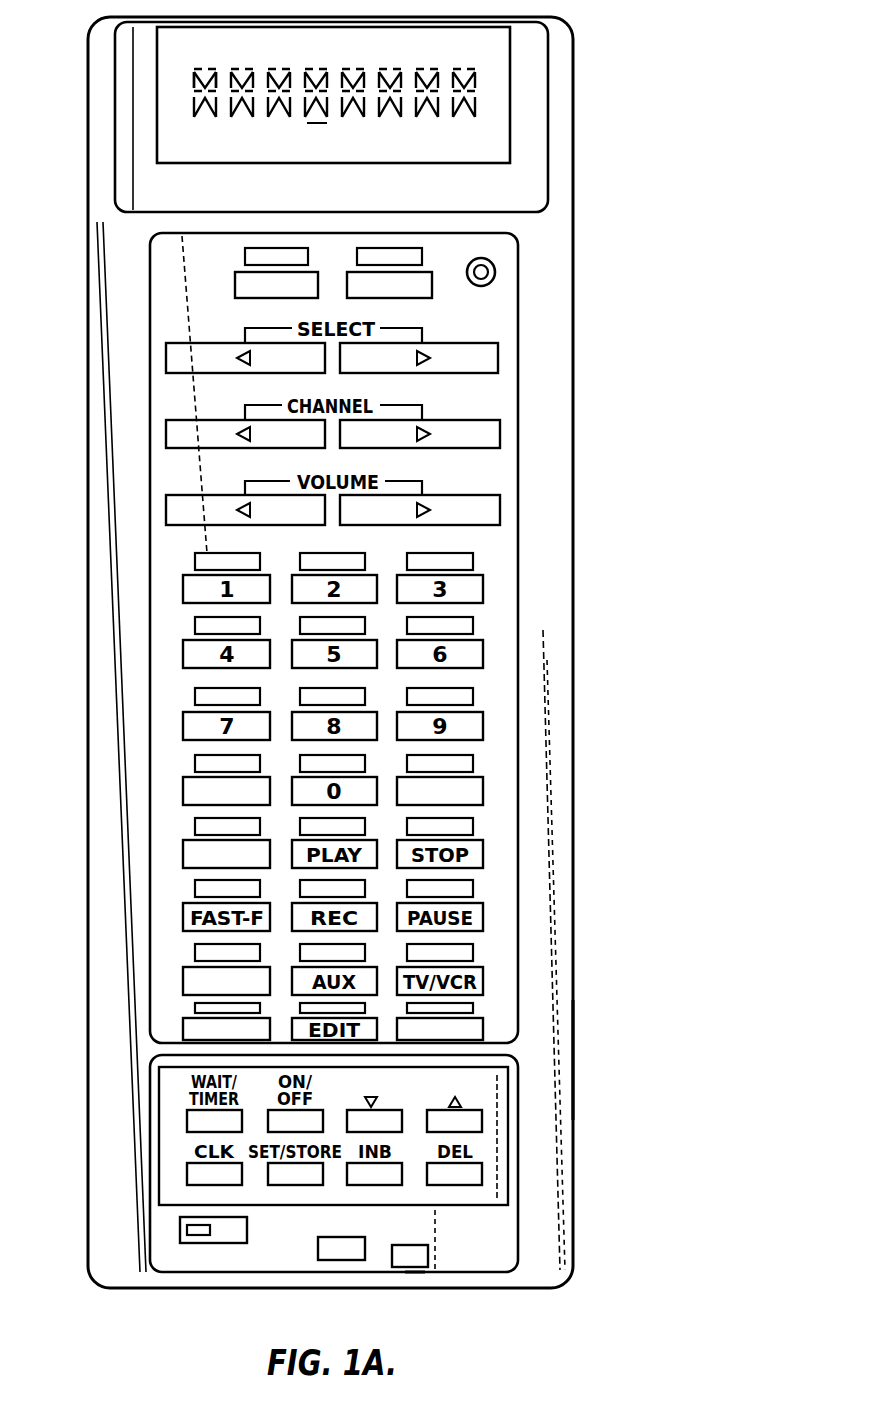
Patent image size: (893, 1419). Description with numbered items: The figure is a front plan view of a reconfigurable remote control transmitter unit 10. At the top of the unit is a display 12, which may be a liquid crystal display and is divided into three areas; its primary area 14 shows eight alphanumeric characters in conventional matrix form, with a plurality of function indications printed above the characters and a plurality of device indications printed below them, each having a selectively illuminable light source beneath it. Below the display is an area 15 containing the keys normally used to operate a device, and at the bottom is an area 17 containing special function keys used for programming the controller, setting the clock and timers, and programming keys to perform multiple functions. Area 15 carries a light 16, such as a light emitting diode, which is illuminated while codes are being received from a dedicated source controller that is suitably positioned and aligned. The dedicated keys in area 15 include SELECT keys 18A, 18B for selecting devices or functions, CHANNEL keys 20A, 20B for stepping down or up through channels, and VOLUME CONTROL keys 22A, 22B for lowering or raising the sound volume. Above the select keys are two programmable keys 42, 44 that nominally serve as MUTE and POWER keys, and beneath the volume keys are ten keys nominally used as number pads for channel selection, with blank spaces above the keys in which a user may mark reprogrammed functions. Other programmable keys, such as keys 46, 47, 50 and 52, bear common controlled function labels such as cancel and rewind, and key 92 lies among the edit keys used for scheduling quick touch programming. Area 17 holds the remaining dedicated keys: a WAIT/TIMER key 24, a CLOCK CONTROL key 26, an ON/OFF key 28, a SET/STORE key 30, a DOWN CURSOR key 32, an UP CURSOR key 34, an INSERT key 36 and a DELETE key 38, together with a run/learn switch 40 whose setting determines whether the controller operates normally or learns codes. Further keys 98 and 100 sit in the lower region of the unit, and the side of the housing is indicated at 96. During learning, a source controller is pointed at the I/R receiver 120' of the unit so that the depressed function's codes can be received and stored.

The transmitter unit 10 is at (608, 599).
The display 12 is at (495, 108).
The primary area 14 is at (192, 80).
The area containing normally accessible keys 15 is at (170, 257).
The light 16 is at (495, 269).
The area containing special function keys 17 is at (167, 1097).
The SELECT key 18A is at (172, 358).
The SELECT key 18B is at (490, 362).
The CHANNEL key 20A is at (172, 434).
The CHANNEL key 20B is at (490, 438).
The VOLUME CONTROL key 22A is at (172, 510).
The VOLUME CONTROL key 22B is at (490, 512).
The WAIT/TIMER key 24 is at (195, 1118).
The CLOCK CONTROL key 26 is at (197, 1172).
The ON/OFF key 28 is at (310, 1122).
The SET/STORE key 30 is at (283, 1184).
The DOWN CURSOR key 32 is at (387, 1118).
The UP CURSOR key 34 is at (473, 1120).
The INSERT key 36 is at (363, 1184).
The DELETE key 38 is at (455, 1181).
The run/learn switch 40 is at (180, 1230).
The MUTE key 42 is at (235, 284).
The POWER key 44 is at (420, 297).
The preset key 46 is at (483, 800).
The cancel key 47 is at (183, 791).
The rewind key 50 is at (183, 853).
The cancel key 52 is at (183, 975).
The QTF key 92 is at (483, 1028).
The housing side 96 is at (576, 1062).
The yes key 98 is at (330, 1261).
The no key 100 is at (407, 1268).
The I/R receiver 120' is at (447, 1297).